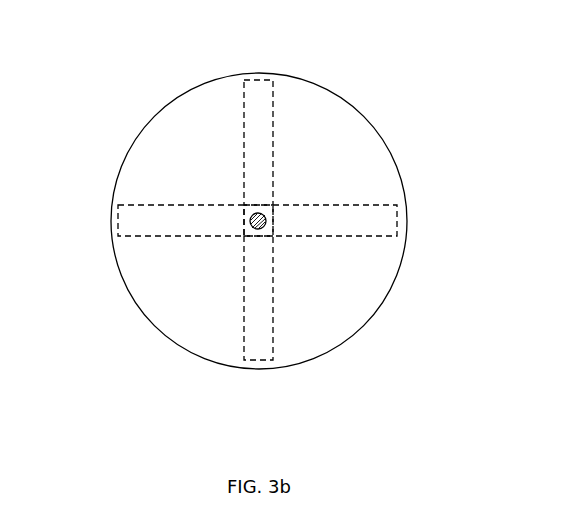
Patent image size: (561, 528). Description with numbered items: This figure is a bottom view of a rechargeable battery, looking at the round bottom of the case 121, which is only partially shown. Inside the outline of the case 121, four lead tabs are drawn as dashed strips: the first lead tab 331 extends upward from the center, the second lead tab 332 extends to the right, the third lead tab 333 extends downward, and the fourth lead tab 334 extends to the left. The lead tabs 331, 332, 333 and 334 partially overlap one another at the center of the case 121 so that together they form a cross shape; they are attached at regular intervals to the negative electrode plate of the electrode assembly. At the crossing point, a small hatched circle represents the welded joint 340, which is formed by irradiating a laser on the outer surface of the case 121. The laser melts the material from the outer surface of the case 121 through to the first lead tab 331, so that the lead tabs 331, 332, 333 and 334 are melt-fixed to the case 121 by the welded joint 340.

The case 121 is at (383, 303).
The first lead tab 331 is at (259, 80).
The second lead tab 332 is at (398, 217).
The third lead tab 333 is at (262, 360).
The fourth lead tab 334 is at (122, 218).
The welded joint 340 is at (240, 237).